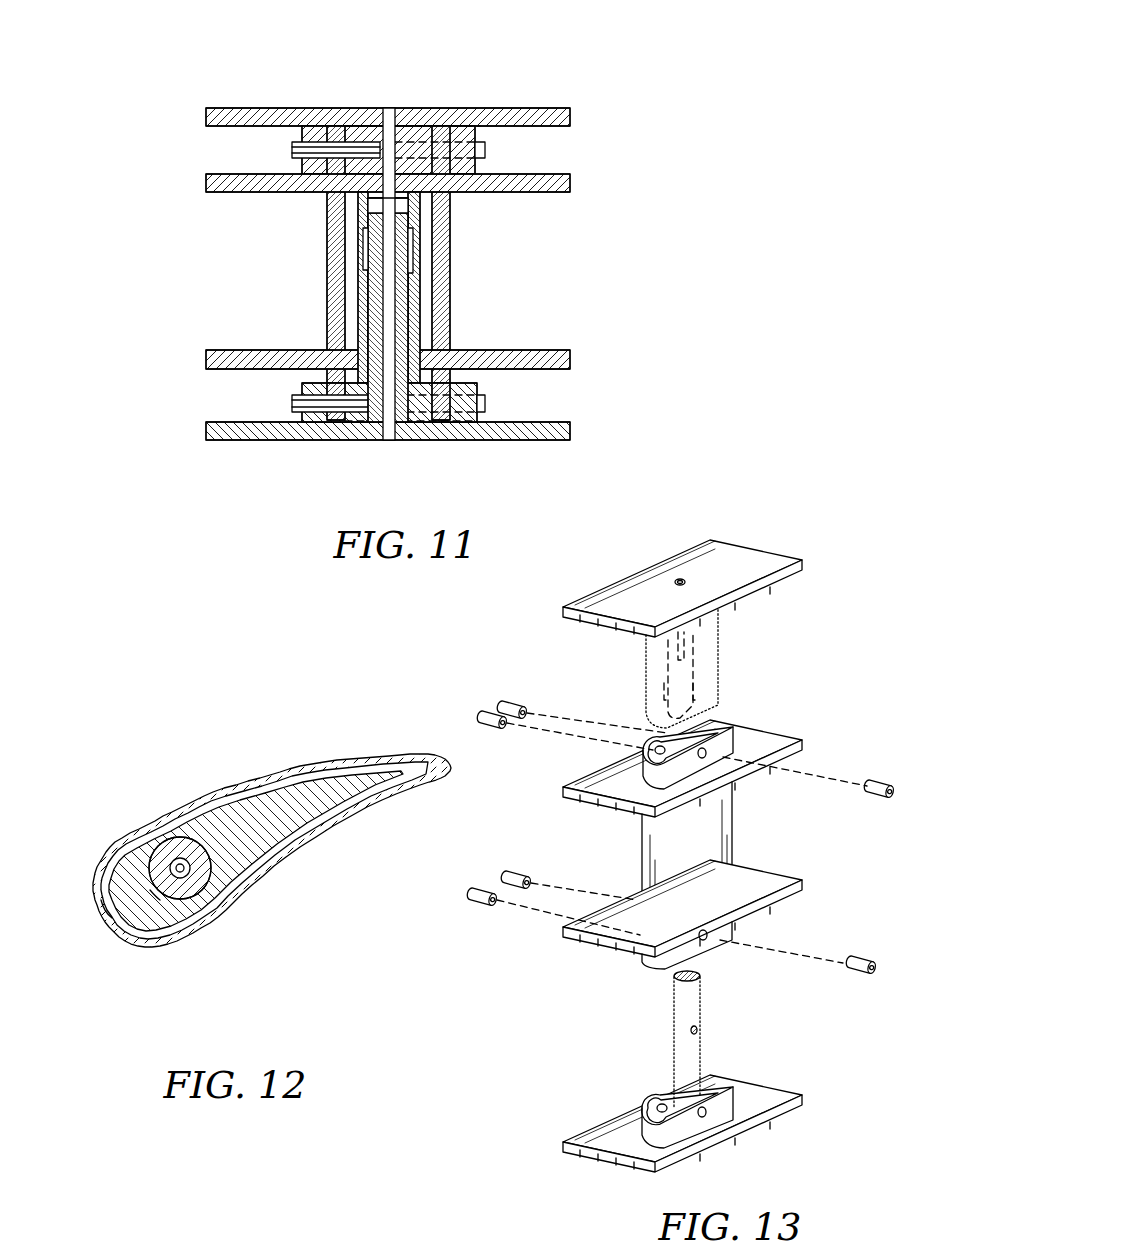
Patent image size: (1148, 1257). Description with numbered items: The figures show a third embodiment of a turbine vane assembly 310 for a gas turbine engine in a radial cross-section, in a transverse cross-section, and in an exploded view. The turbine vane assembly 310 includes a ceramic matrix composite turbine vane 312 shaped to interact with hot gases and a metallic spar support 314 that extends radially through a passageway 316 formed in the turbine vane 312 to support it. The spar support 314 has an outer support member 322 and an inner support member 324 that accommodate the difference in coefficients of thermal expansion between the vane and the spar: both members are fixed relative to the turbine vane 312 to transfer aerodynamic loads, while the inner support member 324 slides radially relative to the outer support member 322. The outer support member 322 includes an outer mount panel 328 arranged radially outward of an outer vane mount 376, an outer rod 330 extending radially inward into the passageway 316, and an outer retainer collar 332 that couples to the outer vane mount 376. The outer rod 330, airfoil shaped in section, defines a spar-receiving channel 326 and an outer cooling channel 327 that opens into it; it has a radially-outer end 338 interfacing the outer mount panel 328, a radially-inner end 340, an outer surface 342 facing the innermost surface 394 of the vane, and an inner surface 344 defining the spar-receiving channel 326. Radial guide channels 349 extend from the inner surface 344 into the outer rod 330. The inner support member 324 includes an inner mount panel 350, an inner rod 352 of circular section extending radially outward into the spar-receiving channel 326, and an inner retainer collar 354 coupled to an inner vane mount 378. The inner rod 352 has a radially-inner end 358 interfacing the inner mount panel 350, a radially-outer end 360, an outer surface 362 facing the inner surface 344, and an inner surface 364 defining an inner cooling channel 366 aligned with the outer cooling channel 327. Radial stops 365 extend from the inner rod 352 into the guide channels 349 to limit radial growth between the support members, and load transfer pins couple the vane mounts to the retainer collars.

In FIG. 11, the turbine vane assembly 310 is at (361, 249).
In FIG. 13, the turbine vane assembly 310 is at (706, 793).
In FIG. 11, the turbine vane 312 is at (439, 278).
In FIG. 12, the turbine vane 312 is at (245, 857).
In FIG. 13, the turbine vane 312 is at (755, 833).
In FIG. 11, the spar support 314 is at (361, 251).
In FIG. 13, the spar support 314 is at (755, 843).
In FIG. 12, the passageway 316 is at (383, 777).
In FIG. 11, the outer support member 322 is at (327, 238).
In FIG. 13, the outer support member 322 is at (728, 610).
In FIG. 11, the inner support member 324 is at (333, 438).
In FIG. 13, the inner support member 324 is at (704, 1075).
In FIG. 11, the spar-receiving channel 326 is at (377, 196).
In FIG. 12, the spar-receiving channel 326 is at (153, 893).
In FIG. 13, the spar-receiving channel 326 is at (718, 640).
In FIG. 11, the outer cooling channel 327 is at (385, 107).
In FIG. 13, the outer cooling channel 327 is at (658, 645).
In FIG. 11, the outer mount panel 328 is at (270, 108).
In FIG. 13, the outer mount panel 328 is at (725, 560).
In FIG. 11, the outer rod 330 is at (355, 214).
In FIG. 12, the outer rod 330 is at (254, 811).
In FIG. 13, the outer rod 330 is at (728, 650).
In FIG. 11, the outer retainer collar 332 is at (290, 142).
In FIG. 13, the outer retainer collar 332 is at (632, 634).
In FIG. 11, the radially-outer end 338 is at (413, 122).
In FIG. 11, the radially-inner end 340 is at (355, 358).
In FIG. 12, the outer surface 342 is at (210, 808).
In FIG. 12, the inner surface 344 is at (207, 855).
In FIG. 11, the radial guide channels 349 is at (363, 243).
In FIG. 13, the radial guide channels 349 is at (660, 685).
In FIG. 11, the inner mount panel 350 is at (505, 440).
In FIG. 13, the inner mount panel 350 is at (720, 1140).
In FIG. 11, the inner rod 352 is at (387, 229).
In FIG. 12, the inner rod 352 is at (223, 873).
In FIG. 13, the inner rod 352 is at (744, 1039).
In FIG. 11, the inner retainer collar 354 is at (480, 415).
In FIG. 13, the inner retainer collar 354 is at (640, 1108).
In FIG. 11, the radially-inner end 358 is at (365, 424).
In FIG. 11, the radially-outer end 360 is at (385, 195).
In FIG. 12, the outer surface 362 is at (196, 888).
In FIG. 12, the inner surface 364 is at (182, 876).
In FIG. 11, the radial stops 365 is at (415, 255).
In FIG. 13, the radial stops 365 is at (700, 1030).
In FIG. 12, the inner cooling channel 366 is at (172, 862).
In FIG. 13, the inner cooling channel 366 is at (680, 580).
In FIG. 11, the outer vane mount 376 is at (388, 183).
In FIG. 13, the outer vane mount 376 is at (745, 735).
In FIG. 11, the inner vane mount 378 is at (388, 359).
In FIG. 13, the inner vane mount 378 is at (740, 925).
In FIG. 12, the innermost surface 394 is at (107, 907).